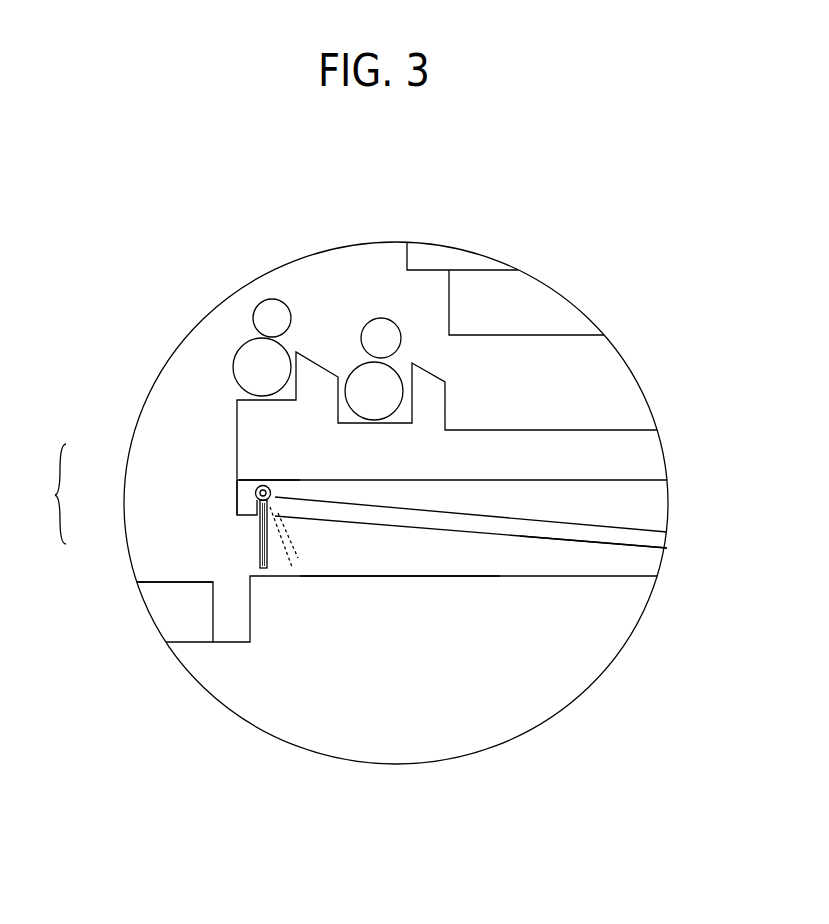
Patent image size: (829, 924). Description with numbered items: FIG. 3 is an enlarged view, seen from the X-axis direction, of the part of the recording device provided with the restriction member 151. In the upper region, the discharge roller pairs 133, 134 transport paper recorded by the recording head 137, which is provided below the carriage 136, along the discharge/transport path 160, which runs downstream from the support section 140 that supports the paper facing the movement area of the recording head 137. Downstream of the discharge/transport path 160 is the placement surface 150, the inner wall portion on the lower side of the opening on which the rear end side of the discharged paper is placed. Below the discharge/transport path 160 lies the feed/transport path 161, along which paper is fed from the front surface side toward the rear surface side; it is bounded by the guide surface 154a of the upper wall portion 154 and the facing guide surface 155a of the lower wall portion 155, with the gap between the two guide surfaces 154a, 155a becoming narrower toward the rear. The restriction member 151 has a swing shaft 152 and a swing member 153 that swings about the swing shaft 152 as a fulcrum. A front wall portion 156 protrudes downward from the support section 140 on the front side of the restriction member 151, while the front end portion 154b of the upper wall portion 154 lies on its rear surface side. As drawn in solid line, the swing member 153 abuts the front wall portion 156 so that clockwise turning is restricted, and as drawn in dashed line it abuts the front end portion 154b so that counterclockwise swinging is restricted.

The discharge roller pair 133 is at (344, 337).
The discharge roller pair 134 is at (222, 310).
The carriage 136 is at (438, 255).
The recording head 137 is at (542, 313).
The support section 140 is at (540, 447).
The placement surface 150 is at (182, 582).
The restriction member 151 is at (40, 494).
The swing shaft 152 is at (263, 482).
The swing member 153 is at (259, 545).
The upper wall portion 154 is at (432, 524).
The guide surface 154a is at (521, 538).
The front end portion 154b is at (272, 498).
The lower wall portion 155 is at (280, 600).
The guide surface 155a is at (350, 576).
The front wall portion 156 is at (250, 504).
The discharge/transport path 160 is at (317, 312).
The feed/transport path 161 is at (476, 574).